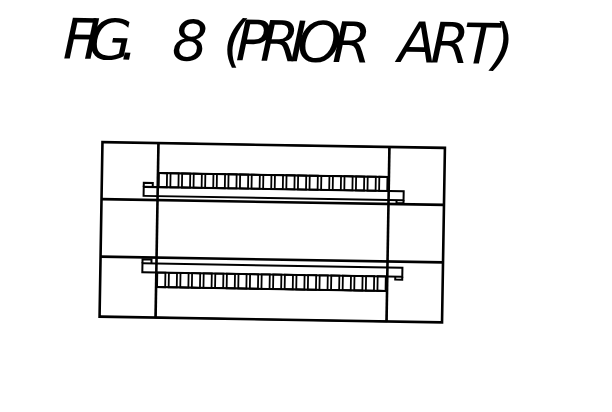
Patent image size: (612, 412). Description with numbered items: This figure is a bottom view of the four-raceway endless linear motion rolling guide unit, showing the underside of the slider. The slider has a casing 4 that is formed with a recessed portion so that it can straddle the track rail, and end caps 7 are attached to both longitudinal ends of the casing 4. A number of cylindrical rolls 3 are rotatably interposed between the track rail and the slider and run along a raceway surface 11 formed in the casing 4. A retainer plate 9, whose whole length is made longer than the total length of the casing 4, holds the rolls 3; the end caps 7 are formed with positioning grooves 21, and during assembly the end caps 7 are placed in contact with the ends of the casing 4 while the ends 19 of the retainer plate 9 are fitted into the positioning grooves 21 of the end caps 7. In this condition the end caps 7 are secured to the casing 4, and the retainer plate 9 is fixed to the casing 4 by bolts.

The end cap 7 is at (117, 164).
The retainer plate 9 is at (208, 176).
The cylindrical roll 3 is at (272, 176).
The casing 4 is at (297, 159).
The raceway surface 11 is at (333, 174).
The end of retainer plate 19 is at (151, 196).
The positioning groove 21 is at (147, 188).